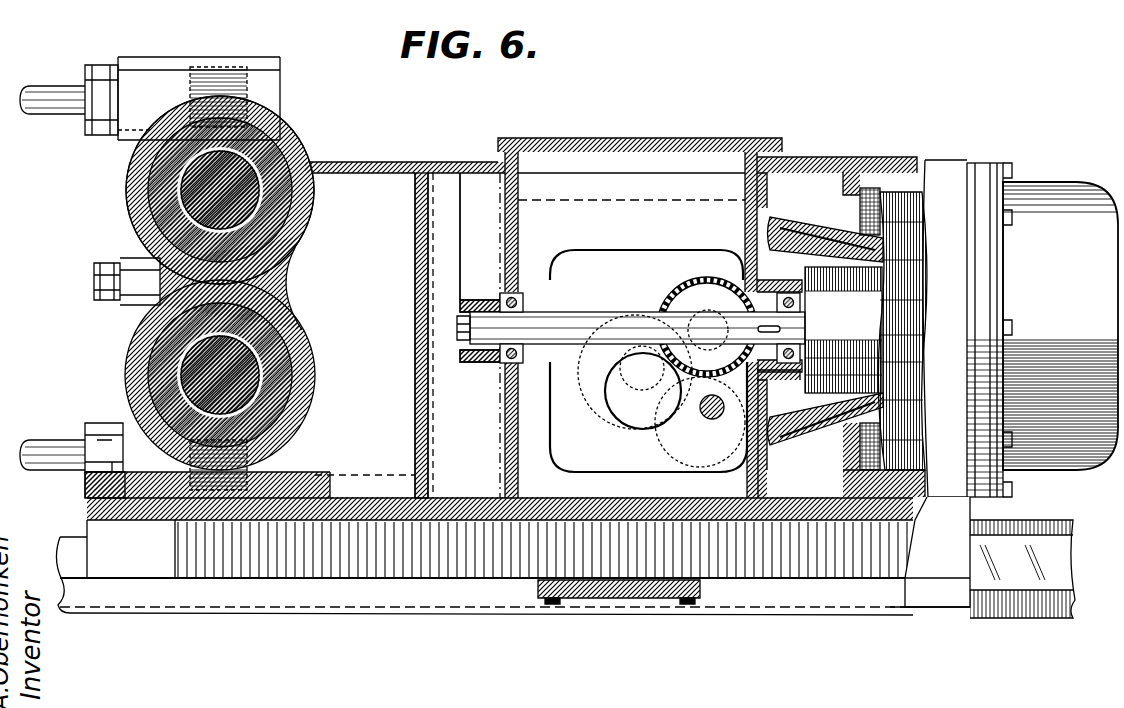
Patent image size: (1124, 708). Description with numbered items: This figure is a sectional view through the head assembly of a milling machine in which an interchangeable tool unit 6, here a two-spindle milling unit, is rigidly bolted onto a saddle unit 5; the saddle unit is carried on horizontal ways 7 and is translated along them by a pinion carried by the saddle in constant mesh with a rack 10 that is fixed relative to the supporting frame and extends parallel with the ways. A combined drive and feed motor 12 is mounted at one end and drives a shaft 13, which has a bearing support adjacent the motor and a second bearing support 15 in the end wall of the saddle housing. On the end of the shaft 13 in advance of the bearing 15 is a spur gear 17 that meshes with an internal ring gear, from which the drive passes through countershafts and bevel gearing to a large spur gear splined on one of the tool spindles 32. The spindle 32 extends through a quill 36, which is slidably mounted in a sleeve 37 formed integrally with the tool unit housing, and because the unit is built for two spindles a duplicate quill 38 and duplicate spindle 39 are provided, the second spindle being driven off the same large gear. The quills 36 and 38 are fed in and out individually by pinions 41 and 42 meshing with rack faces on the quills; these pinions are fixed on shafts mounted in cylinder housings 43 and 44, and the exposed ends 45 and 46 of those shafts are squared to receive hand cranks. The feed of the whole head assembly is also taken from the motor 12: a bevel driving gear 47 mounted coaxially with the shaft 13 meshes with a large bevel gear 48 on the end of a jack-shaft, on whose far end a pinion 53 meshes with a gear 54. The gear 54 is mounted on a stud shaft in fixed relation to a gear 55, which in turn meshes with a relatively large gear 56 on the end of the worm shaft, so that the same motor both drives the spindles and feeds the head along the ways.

The saddle unit 5 is at (478, 160).
The tool unit 6 is at (430, 162).
The horizontal ways 7 is at (1022, 578).
The rack 10 is at (820, 572).
The combined drive and feed motor 12 is at (937, 327).
The shaft 13 is at (570, 322).
The second bearing support 15 is at (525, 295).
The spur gear 17 is at (485, 305).
The tool spindle 32 is at (236, 372).
The quill 36 is at (265, 325).
The sleeve 37 is at (140, 163).
The duplicate quill 38 is at (158, 181).
The duplicate spindle 39 is at (196, 190).
The pinion 41 is at (250, 480).
The pinion 42 is at (213, 75).
The cylinder housing 43 is at (102, 435).
The cylinder housing 44 is at (137, 85).
The exposed end 45 is at (48, 455).
The exposed end 46 is at (62, 116).
The bevel driving gear 47 is at (770, 296).
The large bevel gear 48 is at (690, 300).
The pinion 53 is at (708, 312).
The gear 54 is at (585, 378).
The gear 55 is at (645, 382).
The large gear 56 is at (672, 456).